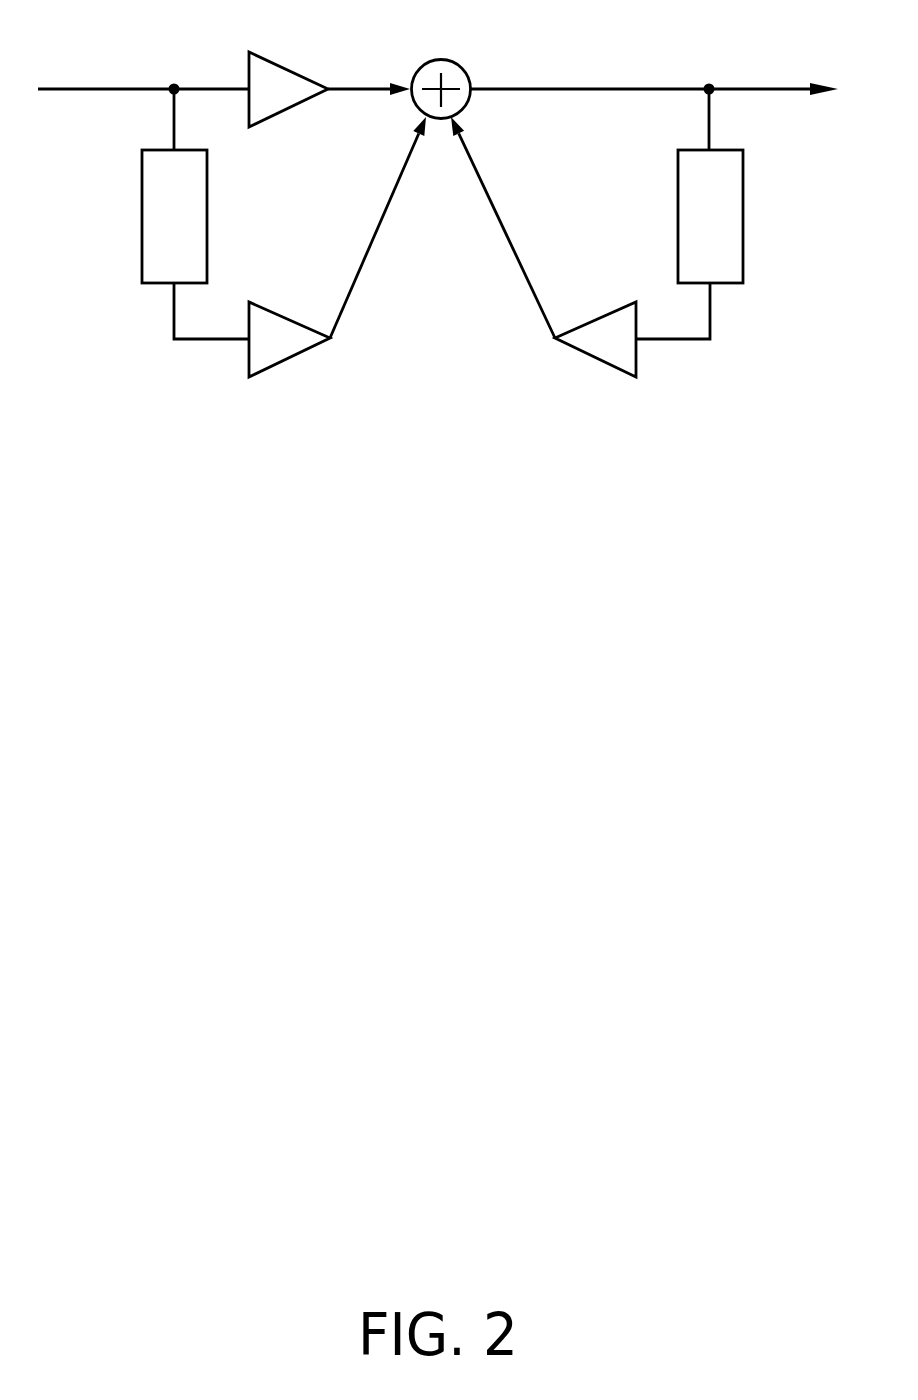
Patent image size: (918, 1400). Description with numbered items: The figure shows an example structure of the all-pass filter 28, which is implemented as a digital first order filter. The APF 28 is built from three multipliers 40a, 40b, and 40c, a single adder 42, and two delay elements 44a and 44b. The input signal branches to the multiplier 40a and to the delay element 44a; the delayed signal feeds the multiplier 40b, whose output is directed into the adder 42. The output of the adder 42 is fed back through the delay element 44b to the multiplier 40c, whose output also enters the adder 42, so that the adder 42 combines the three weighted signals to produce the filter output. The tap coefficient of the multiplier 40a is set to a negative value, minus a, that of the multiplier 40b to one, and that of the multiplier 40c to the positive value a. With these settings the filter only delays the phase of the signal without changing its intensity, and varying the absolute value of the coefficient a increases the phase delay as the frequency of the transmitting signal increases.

The all-pass filter 28 is at (477, 483).
The multiplier 40a is at (280, 67).
The multiplier 40b is at (283, 317).
The multiplier 40c is at (621, 309).
The adder 42 is at (455, 61).
The delay element 44a is at (143, 216).
The delay element 44b is at (683, 183).